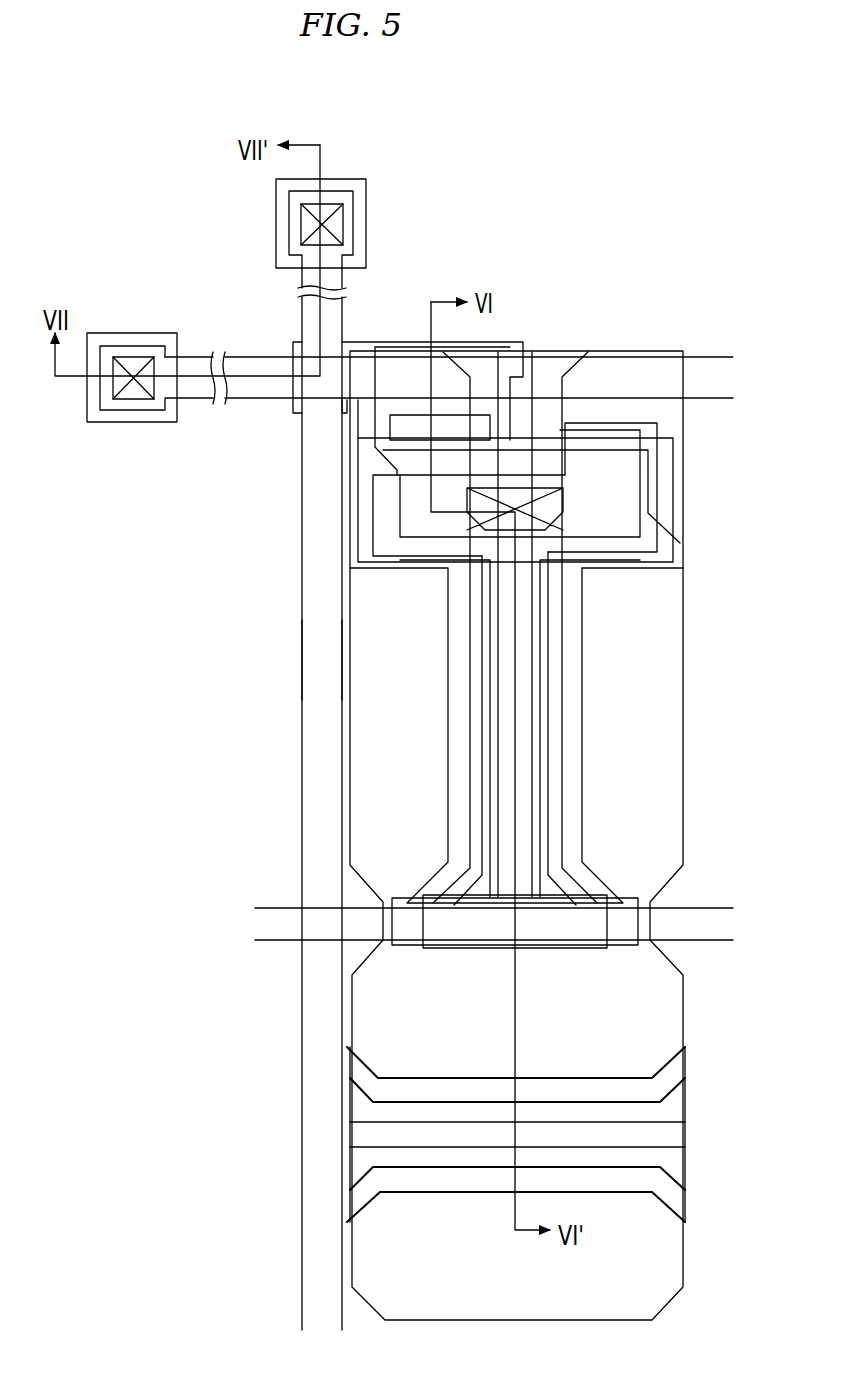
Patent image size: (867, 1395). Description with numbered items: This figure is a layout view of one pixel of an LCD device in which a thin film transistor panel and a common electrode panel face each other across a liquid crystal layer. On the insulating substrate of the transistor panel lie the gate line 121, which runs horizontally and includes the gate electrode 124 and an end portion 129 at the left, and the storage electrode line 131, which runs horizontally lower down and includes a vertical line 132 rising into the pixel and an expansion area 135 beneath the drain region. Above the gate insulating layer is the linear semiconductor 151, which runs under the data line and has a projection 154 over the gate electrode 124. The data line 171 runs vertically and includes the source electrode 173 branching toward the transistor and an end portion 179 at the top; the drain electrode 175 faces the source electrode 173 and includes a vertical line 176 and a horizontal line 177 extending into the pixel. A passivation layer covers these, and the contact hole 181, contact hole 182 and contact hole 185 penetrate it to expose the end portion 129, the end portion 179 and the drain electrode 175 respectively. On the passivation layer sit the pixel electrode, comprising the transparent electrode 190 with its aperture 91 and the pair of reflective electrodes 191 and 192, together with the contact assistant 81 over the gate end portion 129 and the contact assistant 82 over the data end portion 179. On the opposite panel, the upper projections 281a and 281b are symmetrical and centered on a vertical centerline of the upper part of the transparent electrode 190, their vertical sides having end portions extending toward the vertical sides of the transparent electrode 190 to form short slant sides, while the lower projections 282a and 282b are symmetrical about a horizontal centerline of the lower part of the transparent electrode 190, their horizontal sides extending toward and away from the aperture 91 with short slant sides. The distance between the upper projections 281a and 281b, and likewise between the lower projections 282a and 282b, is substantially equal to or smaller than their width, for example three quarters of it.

The contact assistant 81 is at (112, 422).
The end portion 129 is at (133, 346).
The contact hole 181 is at (133, 400).
The gate line 121 is at (705, 357).
The gate electrode 124 is at (358, 423).
The contact assistant 82 is at (289, 230).
The end portion 179 is at (345, 178).
The contact hole 182 is at (353, 222).
The data line 171 is at (343, 775).
The linear semiconductor 151 is at (335, 680).
The transparent electrode 190 is at (683, 718).
The reflective electrode 191 is at (449, 779).
The upper projection 281a is at (468, 682).
The upper projection 281b is at (565, 688).
The source electrode 173 is at (387, 344).
The projection 154 is at (498, 342).
The drain electrode 175 is at (657, 460).
The vertical line 176 is at (552, 652).
The expansion area 135 is at (673, 495).
The vertical line 132 is at (541, 728).
The contact hole 185 is at (563, 527).
The storage electrode line 131 is at (705, 908).
The horizontal line 177 is at (620, 900).
The aperture 91 is at (465, 949).
The reflective electrode 192 is at (577, 1078).
The lower projection 282a is at (443, 1100).
The lower projection 282b is at (430, 1168).